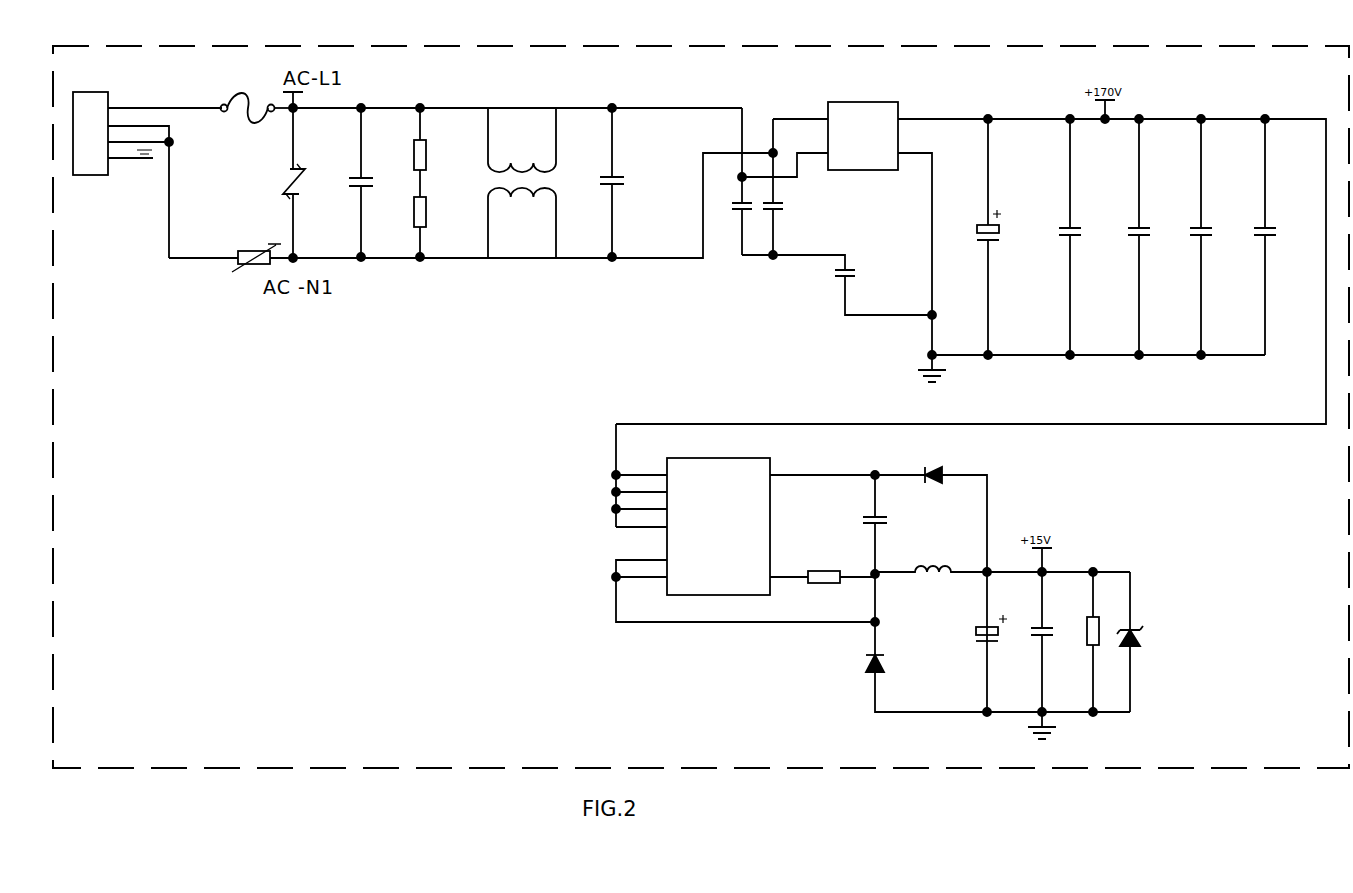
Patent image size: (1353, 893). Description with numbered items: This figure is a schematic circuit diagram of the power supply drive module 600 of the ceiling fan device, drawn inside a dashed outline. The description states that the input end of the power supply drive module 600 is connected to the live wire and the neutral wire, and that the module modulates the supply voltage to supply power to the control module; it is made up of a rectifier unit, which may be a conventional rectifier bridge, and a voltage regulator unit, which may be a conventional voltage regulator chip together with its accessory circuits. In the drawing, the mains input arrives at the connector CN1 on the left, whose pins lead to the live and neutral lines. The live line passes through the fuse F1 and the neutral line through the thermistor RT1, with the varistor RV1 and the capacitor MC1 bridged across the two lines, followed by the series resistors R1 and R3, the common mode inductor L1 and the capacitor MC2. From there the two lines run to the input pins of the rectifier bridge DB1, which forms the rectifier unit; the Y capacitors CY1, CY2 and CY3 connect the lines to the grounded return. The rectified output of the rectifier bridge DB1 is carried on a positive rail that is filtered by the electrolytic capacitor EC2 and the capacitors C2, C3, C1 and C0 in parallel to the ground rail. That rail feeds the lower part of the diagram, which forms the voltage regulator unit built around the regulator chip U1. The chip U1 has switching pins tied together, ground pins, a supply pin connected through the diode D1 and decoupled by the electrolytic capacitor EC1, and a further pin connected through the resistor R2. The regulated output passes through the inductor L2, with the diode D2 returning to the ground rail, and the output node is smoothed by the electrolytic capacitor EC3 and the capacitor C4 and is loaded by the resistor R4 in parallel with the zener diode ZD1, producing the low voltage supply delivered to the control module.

The power supply drive module 600 is at (695, 65).
The connector CN1 is at (147, 169).
The fuse F1 is at (257, 104).
The varistor RV1 is at (274, 183).
The capacitor MC1 is at (343, 182).
The resistor R1 is at (410, 152).
The resistor R3 is at (410, 227).
The common mode inductor L1 is at (522, 182).
The capacitor MC2 is at (629, 182).
The thermistor RT1 is at (231, 253).
The Y capacitor CY1 is at (767, 181).
The Y capacitor CY2 is at (795, 189).
The Y capacitor CY3 is at (839, 287).
The bridge rectifier DB1 is at (971, 256).
The electrolytic capacitor EC2 is at (1005, 237).
The capacitor C2 is at (1081, 237).
The capacitor C3 is at (1150, 237).
The capacitor C1 is at (1214, 237).
The capacitor C0 is at (1276, 235).
The power converter IC U1 is at (768, 525).
The diode D1 is at (954, 578).
The electrolytic capacitor EC1 is at (890, 521).
The resistor R2 is at (841, 568).
The inductor L2 is at (1000, 561).
The diode D2 is at (998, 642).
The electrolytic capacitor EC3 is at (973, 642).
The capacitor C4 is at (1039, 665).
The resistor R4 is at (1082, 642).
The zener diode ZD1 is at (1147, 642).